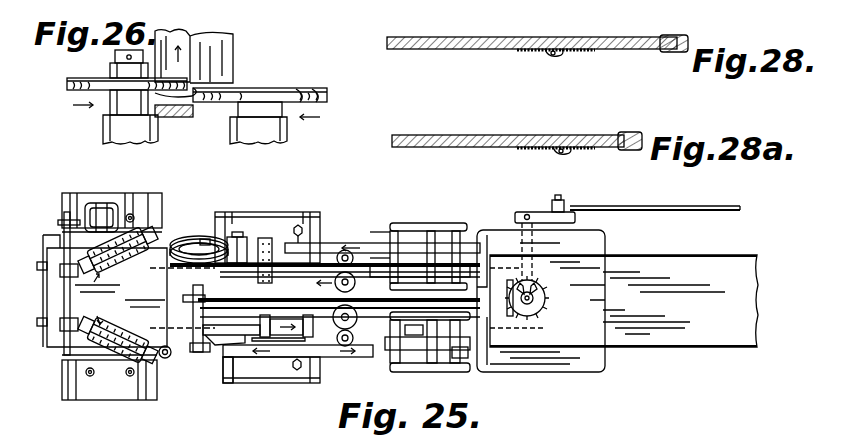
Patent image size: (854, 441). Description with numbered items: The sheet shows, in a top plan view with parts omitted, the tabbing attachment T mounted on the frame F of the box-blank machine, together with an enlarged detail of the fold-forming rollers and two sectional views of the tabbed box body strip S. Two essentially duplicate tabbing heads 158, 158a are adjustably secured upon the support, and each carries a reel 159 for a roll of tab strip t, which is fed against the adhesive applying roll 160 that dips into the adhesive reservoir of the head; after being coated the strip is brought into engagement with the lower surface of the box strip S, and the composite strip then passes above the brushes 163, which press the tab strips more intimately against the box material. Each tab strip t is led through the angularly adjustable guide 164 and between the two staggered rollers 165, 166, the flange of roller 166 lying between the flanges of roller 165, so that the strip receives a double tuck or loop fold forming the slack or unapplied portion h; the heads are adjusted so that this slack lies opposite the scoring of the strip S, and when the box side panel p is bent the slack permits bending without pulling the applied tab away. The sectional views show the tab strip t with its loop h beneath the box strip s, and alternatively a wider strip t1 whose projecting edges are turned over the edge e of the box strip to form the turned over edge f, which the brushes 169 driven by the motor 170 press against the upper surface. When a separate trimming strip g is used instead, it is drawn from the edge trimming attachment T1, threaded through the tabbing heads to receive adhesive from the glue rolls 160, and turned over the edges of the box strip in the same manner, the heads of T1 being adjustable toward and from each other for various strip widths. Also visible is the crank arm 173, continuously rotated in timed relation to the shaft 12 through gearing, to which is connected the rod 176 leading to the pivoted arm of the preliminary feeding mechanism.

In FIG. 26, the roller 165 is at (70, 86).
In FIG. 25, the roller 165 is at (336, 383).
In FIG. 26, the roller 166 is at (300, 88).
In FIG. 25, the motor 170 is at (102, 218).
In FIG. 25, the reel 159 is at (183, 242).
In FIG. 25, the brushes 163 is at (263, 236).
In FIG. 25, the tabbing head 158 is at (333, 362).
In FIG. 25, the tabbing head 158a is at (381, 227).
In FIG. 25, the adhesive applying roll 160 is at (413, 240).
In FIG. 25, the angularly adjustable guide 164 is at (292, 340).
In FIG. 25, the brushes 169 is at (107, 328).
In FIG. 25, the crank arm 173 is at (540, 210).
In FIG. 25, the rod 176 is at (678, 208).
In FIG. 25, the shaft 12 is at (197, 316).
In FIG. 25, the edge trimming attachment T1 is at (145, 215).
In FIG. 25, the tabbing attachment T is at (330, 240).
In FIG. 26, the tab strip t is at (228, 54).
In FIG. 28, the tab strip t is at (583, 52).
In FIG. 25, the tab strip t is at (50, 262).
In FIG. 28, the trimming strip g is at (668, 52).
In FIG. 25, the trimming strip g is at (305, 240).
In FIG. 28, the turned over edge f is at (662, 36).
In FIG. 28A, the turned over edge f is at (626, 134).
In FIG. 25, the turned over edge f is at (58, 246).
In FIG. 28, the box strip s is at (435, 48).
In FIG. 28A, the box strip s is at (445, 136).
In FIG. 25, the box strip s is at (43, 345).
In FIG. 25, the frame F is at (605, 250).
In FIG. 25, the box strip S is at (710, 346).
In FIG. 26, the slack or unapplied portion h is at (194, 35).
In FIG. 28, the slack or unapplied portion h is at (550, 57).
In FIG. 28A, the slack or unapplied portion h is at (554, 155).
In FIG. 28, the joint y is at (572, 46).
In FIG. 28A, the joint y is at (564, 144).
In FIG. 28A, the box side panel p is at (588, 136).
In FIG. 28A, the edge e is at (642, 136).
In FIG. 28A, the strip t1 is at (592, 150).